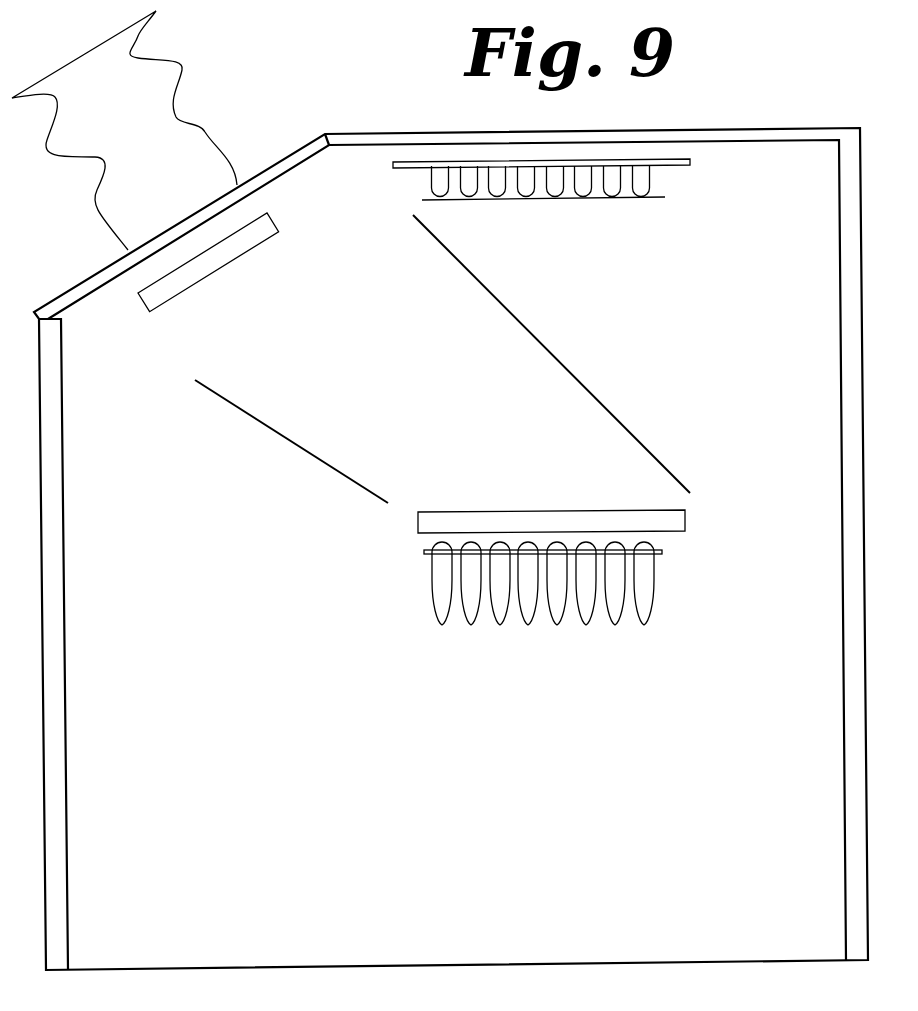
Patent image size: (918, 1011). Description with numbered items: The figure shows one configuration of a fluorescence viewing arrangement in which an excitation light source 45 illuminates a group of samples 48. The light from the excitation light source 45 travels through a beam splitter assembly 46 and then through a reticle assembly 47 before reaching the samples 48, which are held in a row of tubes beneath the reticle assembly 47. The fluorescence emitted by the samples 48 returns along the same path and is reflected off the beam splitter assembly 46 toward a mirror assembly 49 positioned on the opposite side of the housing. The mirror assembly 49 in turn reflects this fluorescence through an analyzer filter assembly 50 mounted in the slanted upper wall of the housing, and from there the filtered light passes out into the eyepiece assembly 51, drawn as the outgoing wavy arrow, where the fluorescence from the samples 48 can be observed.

The excitation light source 45 is at (672, 178).
The beam splitter assembly 46 is at (568, 368).
The reticle assembly 47 is at (680, 531).
The samples 48 is at (617, 617).
The mirror assembly 49 is at (283, 432).
The analyzer filter assembly 50 is at (215, 273).
The eyepiece assembly 51 is at (191, 123).